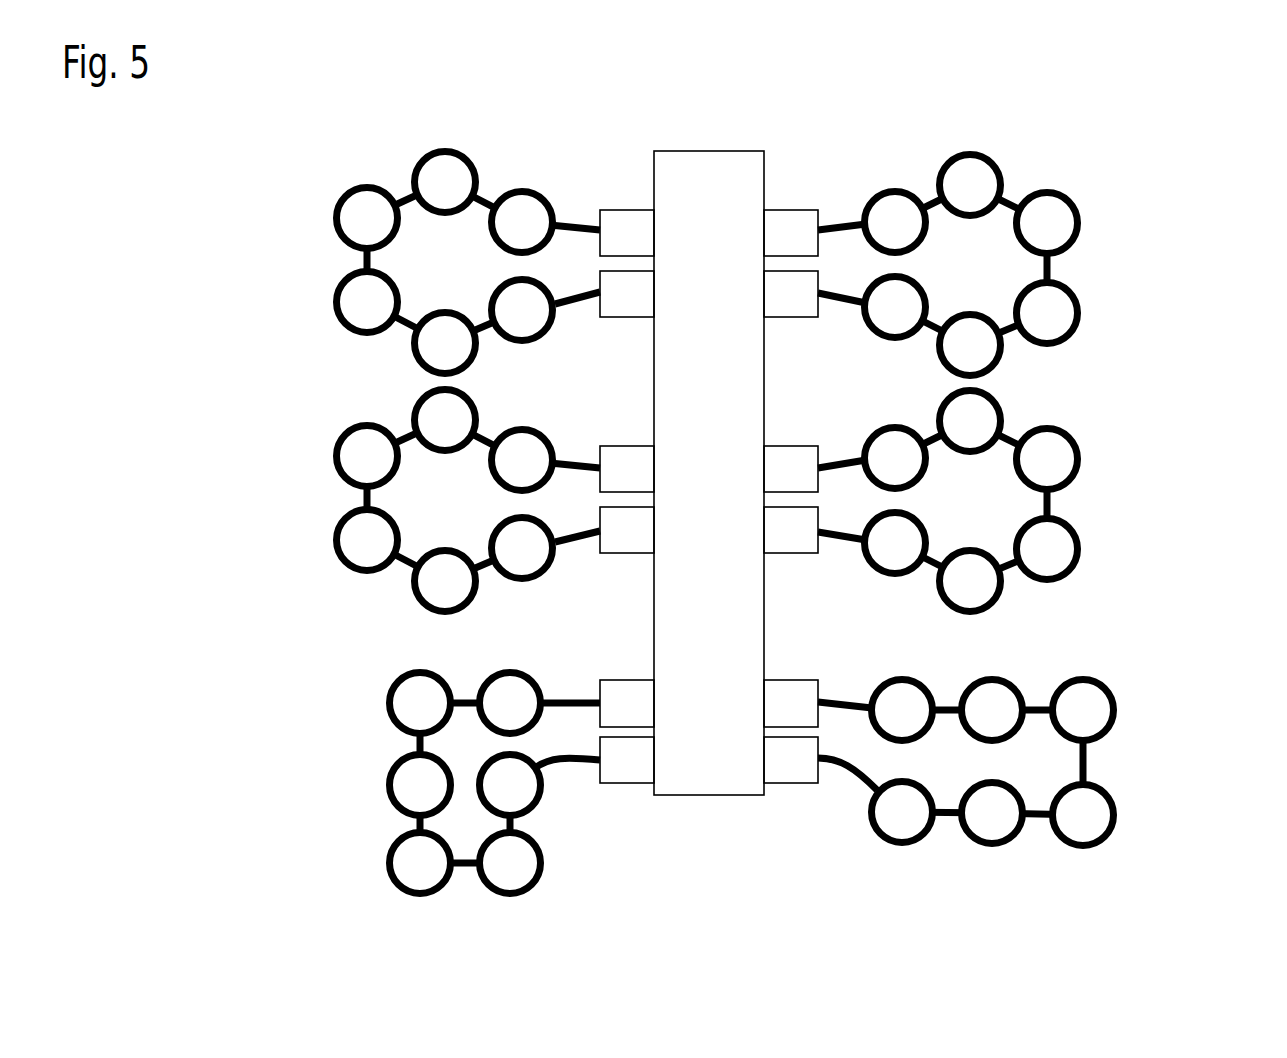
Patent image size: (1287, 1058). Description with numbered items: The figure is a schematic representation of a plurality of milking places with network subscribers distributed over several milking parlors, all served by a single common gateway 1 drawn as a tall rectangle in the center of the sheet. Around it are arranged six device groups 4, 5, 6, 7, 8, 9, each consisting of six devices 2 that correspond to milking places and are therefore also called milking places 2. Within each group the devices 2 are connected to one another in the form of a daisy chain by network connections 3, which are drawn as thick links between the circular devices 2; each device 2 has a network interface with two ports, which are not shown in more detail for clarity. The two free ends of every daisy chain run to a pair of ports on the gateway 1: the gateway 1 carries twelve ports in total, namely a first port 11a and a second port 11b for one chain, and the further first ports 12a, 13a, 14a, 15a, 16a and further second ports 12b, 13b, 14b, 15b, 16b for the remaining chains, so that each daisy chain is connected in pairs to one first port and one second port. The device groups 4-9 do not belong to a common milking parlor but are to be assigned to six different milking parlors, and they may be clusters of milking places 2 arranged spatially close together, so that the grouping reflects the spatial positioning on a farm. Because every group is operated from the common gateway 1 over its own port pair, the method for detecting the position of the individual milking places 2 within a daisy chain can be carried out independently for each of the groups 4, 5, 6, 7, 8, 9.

The gateway 1 is at (720, 150).
The device (milking place) 2 is at (715, 532).
The network connection 3 is at (408, 196).
The device group (milking parlor) 4 is at (1088, 200).
The device group (milking parlor) 5 is at (1215, 528).
The device group (milking parlor) 6 is at (1207, 848).
The device group (milking parlor) 7 is at (345, 877).
The device group (milking parlor) 8 is at (253, 565).
The device group (milking parlor) 9 is at (293, 316).
The first port 11a is at (792, 212).
The second port 11b is at (790, 318).
The another first port 12a is at (790, 447).
The another second port 12b is at (788, 553).
The another first port 13a is at (785, 680).
The another second port 13b is at (785, 783).
The another first port 14a is at (625, 680).
The another second port 14b is at (625, 783).
The another first port 15a is at (622, 445).
The another second port 15b is at (623, 553).
The another first port 16a is at (623, 210).
The another second port 16b is at (630, 317).